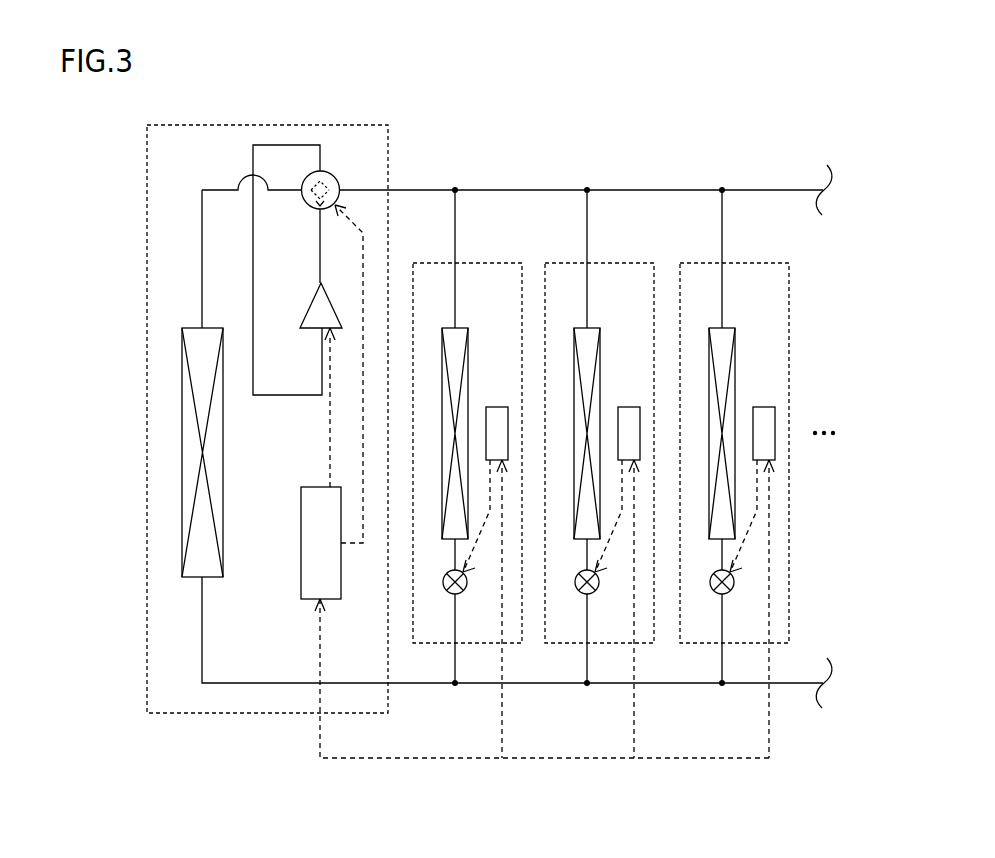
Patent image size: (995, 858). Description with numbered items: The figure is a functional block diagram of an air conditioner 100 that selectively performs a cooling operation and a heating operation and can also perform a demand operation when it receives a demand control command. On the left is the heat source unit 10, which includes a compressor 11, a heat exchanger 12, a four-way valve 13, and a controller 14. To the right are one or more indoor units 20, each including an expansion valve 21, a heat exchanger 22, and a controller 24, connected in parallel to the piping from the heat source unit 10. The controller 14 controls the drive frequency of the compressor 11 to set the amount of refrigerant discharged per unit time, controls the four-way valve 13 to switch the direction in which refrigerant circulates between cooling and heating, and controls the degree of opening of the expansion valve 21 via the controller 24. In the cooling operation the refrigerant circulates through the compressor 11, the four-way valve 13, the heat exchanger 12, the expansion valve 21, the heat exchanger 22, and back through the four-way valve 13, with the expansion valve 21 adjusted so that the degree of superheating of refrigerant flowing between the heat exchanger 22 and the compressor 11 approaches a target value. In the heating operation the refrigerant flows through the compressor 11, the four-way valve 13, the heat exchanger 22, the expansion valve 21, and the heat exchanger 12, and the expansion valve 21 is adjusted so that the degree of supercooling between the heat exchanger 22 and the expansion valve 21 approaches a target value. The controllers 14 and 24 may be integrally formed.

The air conditioner 100 is at (133, 111).
The heat source unit 10 is at (332, 125).
The compressor 11 is at (332, 311).
The heat exchanger 12 is at (190, 327).
The four-way valve 13 is at (334, 174).
The controller 14 is at (300, 544).
The indoor unit 20 is at (477, 263).
The expansion valve 21 is at (465, 588).
The heat exchanger 22 is at (463, 328).
The controller 24 is at (497, 407).